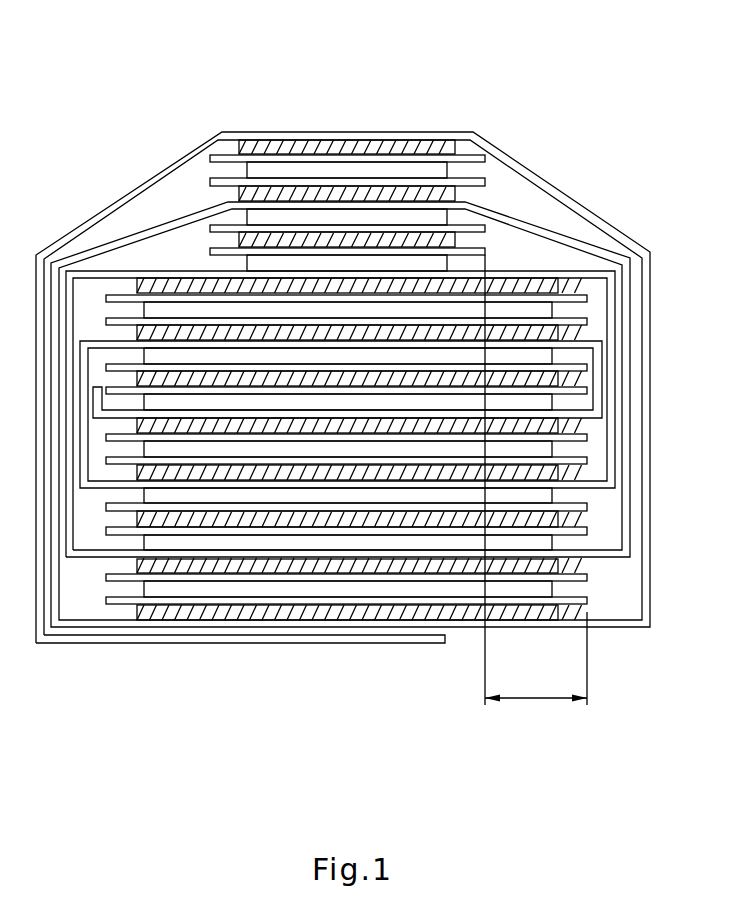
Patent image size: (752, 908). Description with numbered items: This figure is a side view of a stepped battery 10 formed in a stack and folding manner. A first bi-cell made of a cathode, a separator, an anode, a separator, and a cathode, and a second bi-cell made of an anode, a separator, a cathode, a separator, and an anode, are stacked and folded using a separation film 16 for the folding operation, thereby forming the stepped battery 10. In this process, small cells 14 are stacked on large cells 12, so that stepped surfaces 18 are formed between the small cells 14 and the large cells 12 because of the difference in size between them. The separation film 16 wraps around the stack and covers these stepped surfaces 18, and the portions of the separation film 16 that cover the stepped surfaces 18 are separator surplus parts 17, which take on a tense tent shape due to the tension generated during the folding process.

The stepped battery 10 is at (471, 104).
The large cells 12 is at (605, 478).
The small cells 14 is at (486, 268).
The separation film 16 is at (80, 643).
The separator surplus parts 17 is at (157, 233).
The stepped surfaces 18 is at (536, 492).